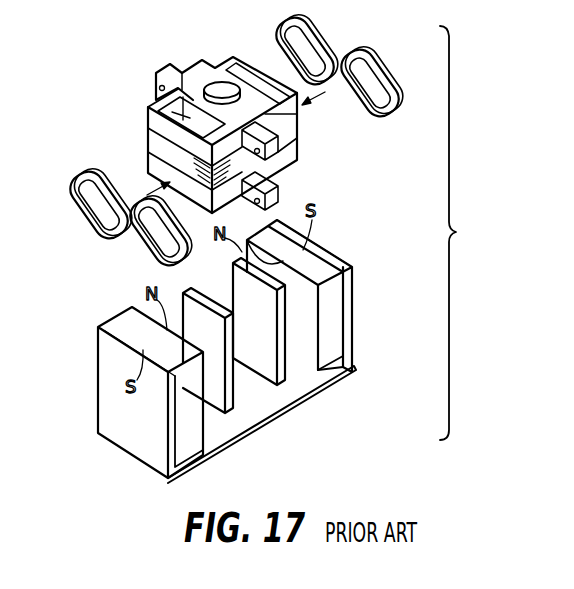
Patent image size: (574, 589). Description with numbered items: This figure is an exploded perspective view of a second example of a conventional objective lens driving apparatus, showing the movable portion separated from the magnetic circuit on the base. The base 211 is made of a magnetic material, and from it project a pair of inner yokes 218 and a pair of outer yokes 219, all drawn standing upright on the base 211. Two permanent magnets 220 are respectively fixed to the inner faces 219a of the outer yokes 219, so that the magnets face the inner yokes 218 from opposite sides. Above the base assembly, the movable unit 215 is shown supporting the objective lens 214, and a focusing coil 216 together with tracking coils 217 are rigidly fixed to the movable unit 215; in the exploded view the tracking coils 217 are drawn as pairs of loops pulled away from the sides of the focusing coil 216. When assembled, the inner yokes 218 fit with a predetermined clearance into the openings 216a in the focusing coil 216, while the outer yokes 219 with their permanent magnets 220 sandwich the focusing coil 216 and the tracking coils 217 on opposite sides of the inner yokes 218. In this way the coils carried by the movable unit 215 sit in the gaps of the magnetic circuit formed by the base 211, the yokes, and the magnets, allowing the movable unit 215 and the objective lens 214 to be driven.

The base 211 is at (266, 422).
The objective lens 214 is at (221, 83).
The movable unit 215 is at (157, 71).
The focusing coil 216 is at (148, 142).
The openings 216a is at (160, 103).
The tracking coils 217 is at (333, 33).
The inner yokes 218 is at (217, 402).
The outer yokes 219 is at (100, 374).
The inner faces 219a is at (330, 250).
The permanent magnets 220 is at (182, 415).